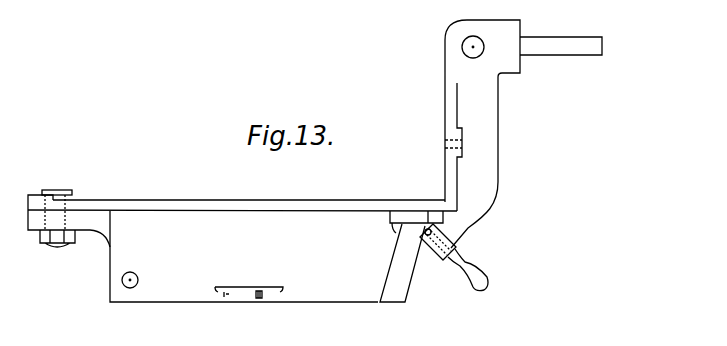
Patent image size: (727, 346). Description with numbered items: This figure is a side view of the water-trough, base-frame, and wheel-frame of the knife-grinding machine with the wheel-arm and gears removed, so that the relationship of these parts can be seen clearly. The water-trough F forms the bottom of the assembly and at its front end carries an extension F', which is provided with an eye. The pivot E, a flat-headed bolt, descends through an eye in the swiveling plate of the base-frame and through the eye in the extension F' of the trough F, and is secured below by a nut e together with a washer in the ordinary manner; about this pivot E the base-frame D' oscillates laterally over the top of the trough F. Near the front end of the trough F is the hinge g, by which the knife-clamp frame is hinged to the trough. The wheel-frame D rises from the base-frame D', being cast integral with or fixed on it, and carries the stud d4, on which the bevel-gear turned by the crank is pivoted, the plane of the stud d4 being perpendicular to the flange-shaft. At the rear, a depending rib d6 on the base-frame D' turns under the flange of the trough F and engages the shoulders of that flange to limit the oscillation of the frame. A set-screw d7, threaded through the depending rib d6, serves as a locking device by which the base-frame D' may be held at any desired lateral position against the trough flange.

The pivot E is at (69, 204).
The nut e is at (57, 229).
The extension of the front end of the trough F' is at (242, 232).
The water-trough F is at (244, 256).
The hinge g is at (139, 277).
The base-frame D' is at (385, 224).
The wheel-frame D is at (450, 161).
The pivot hole of lever d is at (483, 42).
The stud d4 is at (574, 36).
The depending rib d6 is at (438, 257).
The set-screw d7 is at (484, 271).